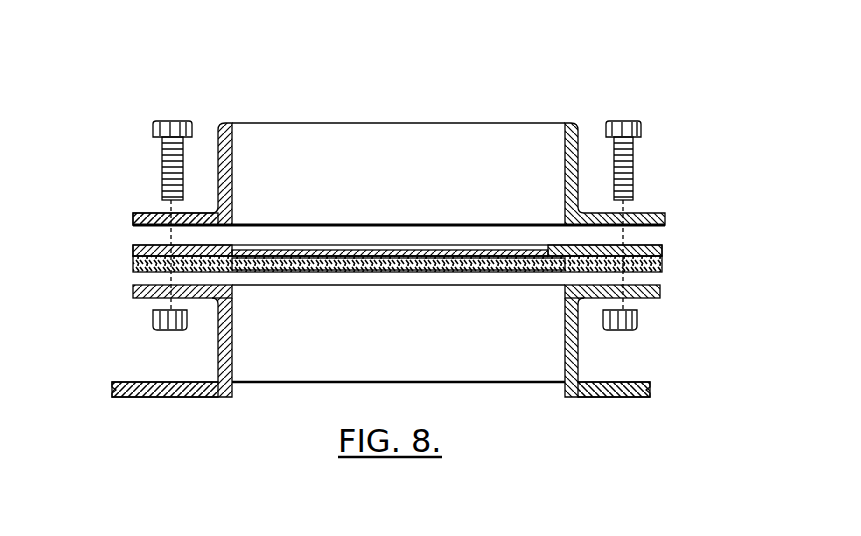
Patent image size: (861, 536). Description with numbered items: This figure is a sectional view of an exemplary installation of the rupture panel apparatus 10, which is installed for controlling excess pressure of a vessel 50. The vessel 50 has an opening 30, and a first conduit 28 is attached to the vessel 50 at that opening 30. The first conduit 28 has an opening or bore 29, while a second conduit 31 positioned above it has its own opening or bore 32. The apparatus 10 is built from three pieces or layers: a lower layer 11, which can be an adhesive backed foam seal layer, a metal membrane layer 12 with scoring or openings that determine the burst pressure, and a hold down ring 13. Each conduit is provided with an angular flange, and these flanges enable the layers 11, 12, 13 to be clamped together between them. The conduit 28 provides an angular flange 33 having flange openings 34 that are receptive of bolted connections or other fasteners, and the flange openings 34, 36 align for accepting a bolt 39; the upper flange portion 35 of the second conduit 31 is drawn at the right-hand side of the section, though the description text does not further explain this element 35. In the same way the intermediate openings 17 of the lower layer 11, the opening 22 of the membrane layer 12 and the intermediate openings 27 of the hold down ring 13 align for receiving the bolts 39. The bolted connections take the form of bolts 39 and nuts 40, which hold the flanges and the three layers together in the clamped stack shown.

The rupture panel apparatus 10 is at (532, 64).
The lower layer 11 is at (518, 272).
The metal membrane layer 12 is at (450, 250).
The hold down ring 13 is at (560, 250).
The intermediate openings 17 is at (148, 267).
The opening 22 is at (229, 226).
The intermediate openings 27 is at (160, 246).
The first conduit 28 is at (233, 362).
The bore 29 is at (480, 343).
The opening 30 is at (489, 394).
The second conduit 31 is at (220, 128).
The bore 32 is at (426, 156).
The angular flange 33 is at (142, 292).
The flange openings 34 is at (636, 287).
The upper right bracket 35 is at (665, 212).
The flange openings 36 is at (165, 212).
The bolts 39 is at (153, 130).
The nuts 40 is at (153, 320).
The vessel 50 is at (160, 398).